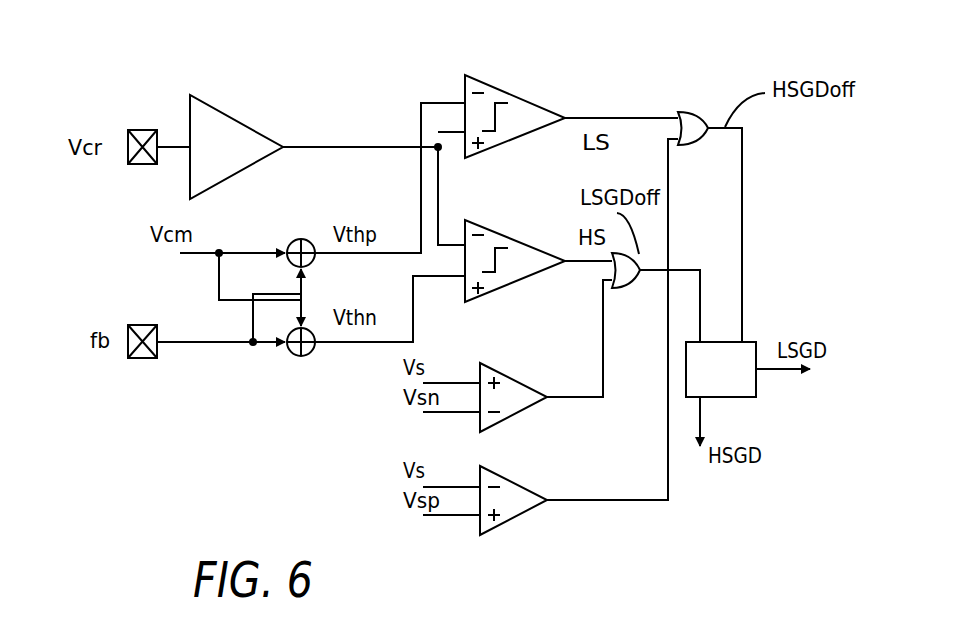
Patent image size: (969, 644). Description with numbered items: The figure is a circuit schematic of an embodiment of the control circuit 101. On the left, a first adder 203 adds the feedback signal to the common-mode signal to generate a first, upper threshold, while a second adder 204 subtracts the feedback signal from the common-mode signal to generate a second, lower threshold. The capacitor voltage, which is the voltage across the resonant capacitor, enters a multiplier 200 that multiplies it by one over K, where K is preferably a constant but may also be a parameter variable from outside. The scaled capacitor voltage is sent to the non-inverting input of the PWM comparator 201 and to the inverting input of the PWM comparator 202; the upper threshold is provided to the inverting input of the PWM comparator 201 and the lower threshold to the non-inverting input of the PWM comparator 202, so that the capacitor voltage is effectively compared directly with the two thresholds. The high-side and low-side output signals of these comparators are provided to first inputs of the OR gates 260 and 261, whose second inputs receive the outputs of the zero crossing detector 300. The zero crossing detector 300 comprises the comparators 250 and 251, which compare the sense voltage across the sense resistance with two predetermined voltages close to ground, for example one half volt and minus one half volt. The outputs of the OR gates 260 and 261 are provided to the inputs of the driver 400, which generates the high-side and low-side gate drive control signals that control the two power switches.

The control circuit 101 is at (140, 95).
The multiplier 200 is at (218, 122).
The PWM comparator 201 is at (525, 113).
The PWM comparator 202 is at (510, 270).
The first adder 203 is at (306, 245).
The second adder 204 is at (307, 355).
The comparator 250 is at (508, 400).
The comparator 251 is at (508, 503).
The OR gate 260 is at (629, 290).
The OR gate 261 is at (692, 122).
The zero crossing detector 300 is at (630, 540).
The driver 400 is at (752, 342).